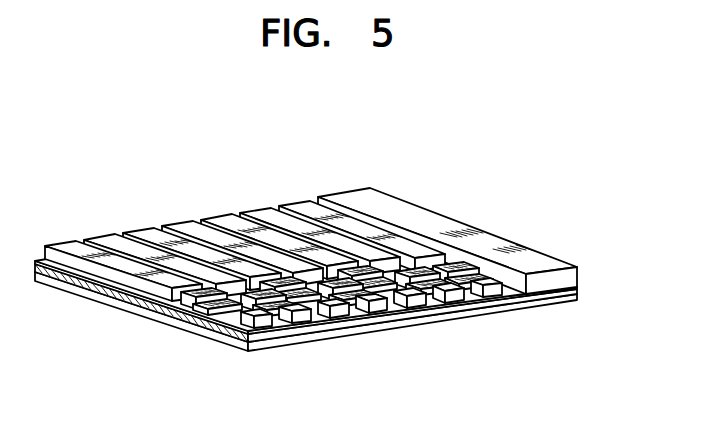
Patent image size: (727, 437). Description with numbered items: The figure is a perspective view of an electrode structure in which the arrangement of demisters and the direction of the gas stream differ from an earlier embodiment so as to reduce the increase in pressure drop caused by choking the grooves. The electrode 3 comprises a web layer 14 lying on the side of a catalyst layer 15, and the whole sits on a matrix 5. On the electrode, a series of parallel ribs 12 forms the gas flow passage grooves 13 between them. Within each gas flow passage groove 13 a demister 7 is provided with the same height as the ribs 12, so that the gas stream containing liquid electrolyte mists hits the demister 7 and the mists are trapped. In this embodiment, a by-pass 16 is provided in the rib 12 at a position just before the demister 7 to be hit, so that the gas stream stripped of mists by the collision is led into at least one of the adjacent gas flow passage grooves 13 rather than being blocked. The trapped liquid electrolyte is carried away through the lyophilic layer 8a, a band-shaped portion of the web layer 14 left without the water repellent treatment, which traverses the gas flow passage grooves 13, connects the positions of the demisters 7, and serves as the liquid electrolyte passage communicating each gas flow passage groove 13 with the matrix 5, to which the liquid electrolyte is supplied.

The electrode 3 is at (357, 198).
The matrix 5 is at (577, 300).
The demister 7 is at (450, 270).
The lyophilic layer 8a is at (220, 329).
The rib 12 is at (128, 234).
The gas flow passage groove 13 is at (191, 227).
The web layer 14 is at (117, 300).
The catalyst layer 15 is at (547, 290).
The by-pass 16 is at (241, 327).